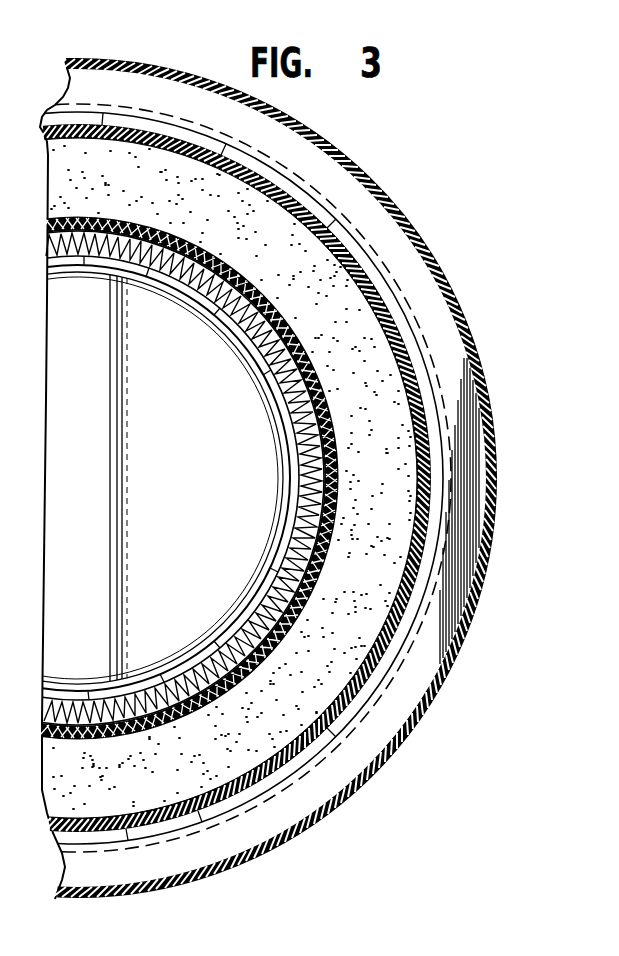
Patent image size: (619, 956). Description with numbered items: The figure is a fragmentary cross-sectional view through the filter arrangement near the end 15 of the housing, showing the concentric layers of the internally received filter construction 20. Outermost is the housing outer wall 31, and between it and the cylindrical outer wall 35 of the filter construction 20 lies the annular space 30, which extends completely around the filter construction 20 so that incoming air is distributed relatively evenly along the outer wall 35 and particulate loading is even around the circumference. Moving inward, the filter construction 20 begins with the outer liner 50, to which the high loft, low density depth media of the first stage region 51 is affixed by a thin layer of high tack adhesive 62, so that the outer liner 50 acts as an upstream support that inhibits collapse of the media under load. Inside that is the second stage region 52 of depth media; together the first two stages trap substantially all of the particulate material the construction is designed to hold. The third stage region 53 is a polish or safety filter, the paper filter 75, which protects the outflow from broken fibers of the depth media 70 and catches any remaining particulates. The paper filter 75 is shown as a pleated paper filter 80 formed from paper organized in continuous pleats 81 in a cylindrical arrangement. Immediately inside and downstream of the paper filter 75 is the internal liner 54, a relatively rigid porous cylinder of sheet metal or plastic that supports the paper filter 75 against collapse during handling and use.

The end 15 is at (463, 343).
The filter construction 20 is at (432, 549).
The annular space 30 is at (477, 425).
The housing outer wall 31 is at (480, 383).
The outer wall 35 is at (430, 486).
The outer liner 50 is at (393, 330).
The stage 1 region 51 is at (355, 318).
The stage 2 region 52 is at (282, 406).
The stage 3 region 53 is at (292, 438).
The internal liner 54 is at (297, 482).
The layer of adhesive 62 is at (388, 600).
The depth media 70 is at (90, 707).
The paper filter 75 is at (263, 600).
The pleated paper filter 80 is at (160, 674).
The pleats 81 is at (266, 373).